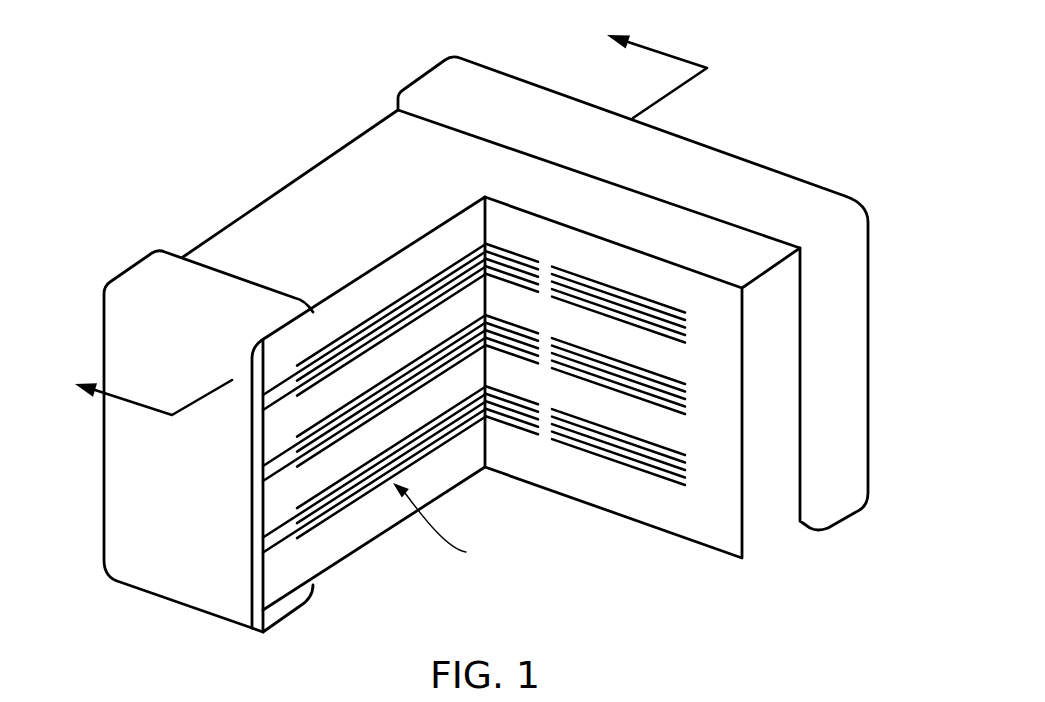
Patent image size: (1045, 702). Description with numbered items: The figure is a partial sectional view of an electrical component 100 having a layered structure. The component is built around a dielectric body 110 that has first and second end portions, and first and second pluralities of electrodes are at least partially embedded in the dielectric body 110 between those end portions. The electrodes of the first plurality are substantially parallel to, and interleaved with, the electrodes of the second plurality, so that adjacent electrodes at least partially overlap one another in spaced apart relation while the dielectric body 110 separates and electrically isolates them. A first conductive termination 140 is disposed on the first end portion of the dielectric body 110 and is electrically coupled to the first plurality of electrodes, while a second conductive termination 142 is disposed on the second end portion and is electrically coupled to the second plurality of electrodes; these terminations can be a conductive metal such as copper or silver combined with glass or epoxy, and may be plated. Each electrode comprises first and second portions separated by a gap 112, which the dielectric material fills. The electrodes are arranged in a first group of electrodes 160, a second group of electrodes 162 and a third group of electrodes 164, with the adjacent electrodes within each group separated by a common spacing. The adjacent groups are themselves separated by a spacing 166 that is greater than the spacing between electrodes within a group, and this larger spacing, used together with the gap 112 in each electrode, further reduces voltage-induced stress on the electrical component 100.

The electrical component 100 is at (490, 326).
The dielectric body 110 is at (281, 190).
The gap 112 is at (709, 276).
The first conductive termination 140 is at (210, 588).
The second conductive termination 142 is at (652, 126).
The first group of electrodes 160 is at (720, 331).
The second group of electrodes 162 is at (720, 393).
The third group of electrodes 164 is at (720, 472).
The spacing 166 is at (280, 419).